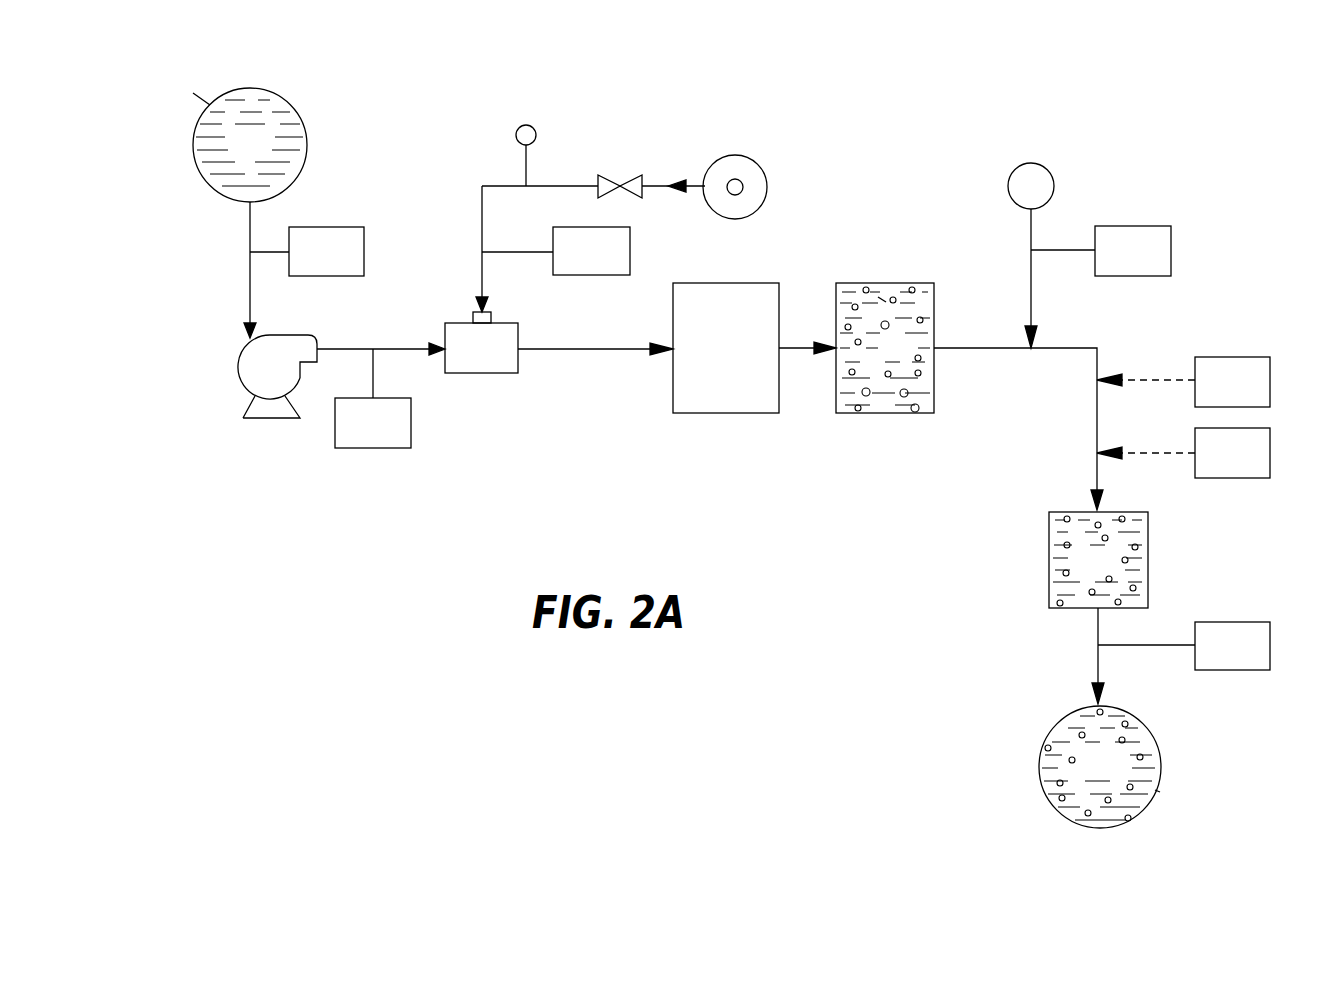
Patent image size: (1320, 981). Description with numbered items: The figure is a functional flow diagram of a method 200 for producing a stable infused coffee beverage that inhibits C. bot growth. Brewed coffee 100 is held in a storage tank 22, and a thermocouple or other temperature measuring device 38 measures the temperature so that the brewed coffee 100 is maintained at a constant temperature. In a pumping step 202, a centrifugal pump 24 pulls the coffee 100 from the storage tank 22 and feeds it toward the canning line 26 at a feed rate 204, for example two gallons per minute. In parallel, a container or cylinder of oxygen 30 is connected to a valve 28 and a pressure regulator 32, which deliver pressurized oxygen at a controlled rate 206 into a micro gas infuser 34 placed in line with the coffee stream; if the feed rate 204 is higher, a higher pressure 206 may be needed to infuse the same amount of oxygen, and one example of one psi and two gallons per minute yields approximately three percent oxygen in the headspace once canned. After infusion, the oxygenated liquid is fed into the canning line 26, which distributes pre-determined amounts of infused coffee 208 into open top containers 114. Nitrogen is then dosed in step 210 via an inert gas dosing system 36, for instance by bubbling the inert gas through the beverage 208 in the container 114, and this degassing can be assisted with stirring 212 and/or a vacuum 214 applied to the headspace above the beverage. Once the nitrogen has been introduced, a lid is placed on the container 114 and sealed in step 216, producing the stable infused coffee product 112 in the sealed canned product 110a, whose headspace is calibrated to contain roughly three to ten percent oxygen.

The method 200 is at (567, 118).
The storage tank 22 is at (302, 118).
The brewed coffee 100 is at (249, 143).
The thermocouple 38 is at (193, 93).
The pumping step 202 is at (307, 251).
The centrifugal pump 24 is at (282, 379).
The feed rate 204 is at (373, 398).
The micro gas infuser 34 is at (481, 342).
The controlled rate 206 is at (556, 251).
The pressure regulator 32 is at (516, 133).
The valve 28 is at (614, 173).
The container of oxygen 30 is at (760, 157).
The canning line 26 is at (726, 348).
The infused coffee 208 is at (885, 348).
The container 114 is at (882, 302).
The inert gas dosing system 36 is at (1031, 255).
The nitrogen dosing step 210 is at (1101, 251).
The stirring 212 is at (1183, 382).
The vacuum 214 is at (1183, 453).
The stable infused coffee product 112 is at (1100, 670).
The sealing step 216 is at (1184, 646).
The canned product 110a is at (1158, 791).